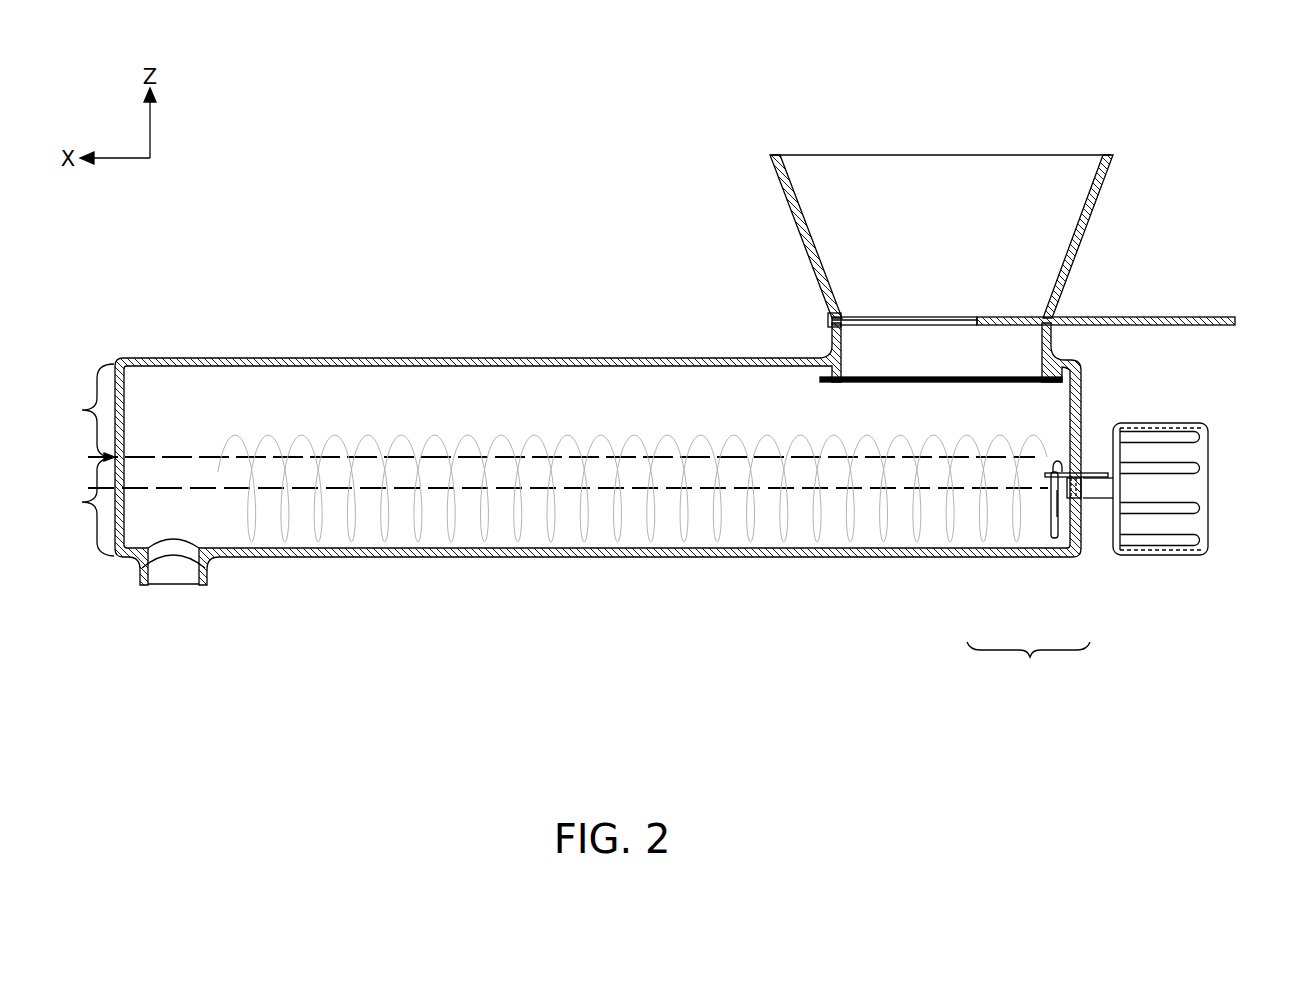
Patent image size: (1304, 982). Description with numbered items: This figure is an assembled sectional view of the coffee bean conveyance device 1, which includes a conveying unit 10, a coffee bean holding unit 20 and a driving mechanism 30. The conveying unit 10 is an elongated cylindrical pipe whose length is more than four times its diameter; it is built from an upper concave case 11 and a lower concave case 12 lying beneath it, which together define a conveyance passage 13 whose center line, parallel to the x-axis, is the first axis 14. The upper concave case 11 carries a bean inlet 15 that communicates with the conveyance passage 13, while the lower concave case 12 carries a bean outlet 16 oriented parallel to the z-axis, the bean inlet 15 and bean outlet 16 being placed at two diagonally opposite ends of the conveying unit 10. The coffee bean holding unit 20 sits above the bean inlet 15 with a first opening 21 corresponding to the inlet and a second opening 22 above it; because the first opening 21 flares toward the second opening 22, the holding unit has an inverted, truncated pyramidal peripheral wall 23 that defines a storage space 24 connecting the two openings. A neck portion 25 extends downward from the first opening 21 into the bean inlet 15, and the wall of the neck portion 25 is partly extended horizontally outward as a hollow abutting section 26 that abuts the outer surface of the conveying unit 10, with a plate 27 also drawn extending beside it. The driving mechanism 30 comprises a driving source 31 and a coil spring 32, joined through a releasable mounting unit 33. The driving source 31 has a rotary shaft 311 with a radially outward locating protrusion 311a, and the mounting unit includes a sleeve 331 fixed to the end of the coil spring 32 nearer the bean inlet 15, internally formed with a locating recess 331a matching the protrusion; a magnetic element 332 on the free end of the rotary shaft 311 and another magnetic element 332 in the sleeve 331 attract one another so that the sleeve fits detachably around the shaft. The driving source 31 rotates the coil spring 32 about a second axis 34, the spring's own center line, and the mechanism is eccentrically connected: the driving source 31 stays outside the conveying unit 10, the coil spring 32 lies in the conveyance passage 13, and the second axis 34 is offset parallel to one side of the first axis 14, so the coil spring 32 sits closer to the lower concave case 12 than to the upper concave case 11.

The coffee bean conveyance device 1 is at (607, 78).
The conveying unit 10 is at (448, 338).
The upper concave case 11 is at (84, 412).
The lower concave case 12 is at (84, 507).
The conveyance passage 13 is at (285, 415).
The first axis 14 is at (176, 455).
The bean inlet 15 is at (828, 350).
The bean outlet 16 is at (170, 587).
The coffee bean holding unit 20 is at (698, 210).
The first opening 21 is at (943, 316).
The second opening 22 is at (942, 155).
The peripheral wall 23 is at (1078, 236).
The storage space 24 is at (855, 245).
The neck portion 25 is at (1048, 344).
The abutting section 26 is at (828, 323).
The mounting plate 27 is at (1190, 318).
The driving mechanism 30 is at (849, 591).
The driving source 31 is at (1195, 540).
The rotary shaft 311 is at (1103, 490).
The locating protrusion 311a is at (1095, 476).
The coil spring 32 is at (388, 545).
The releasable mounting unit 33 is at (1028, 665).
The sleeve 331 is at (1055, 540).
The locating recess 331a is at (1066, 468).
The magnetic element 332 is at (1078, 503).
The second axis 34 is at (634, 490).